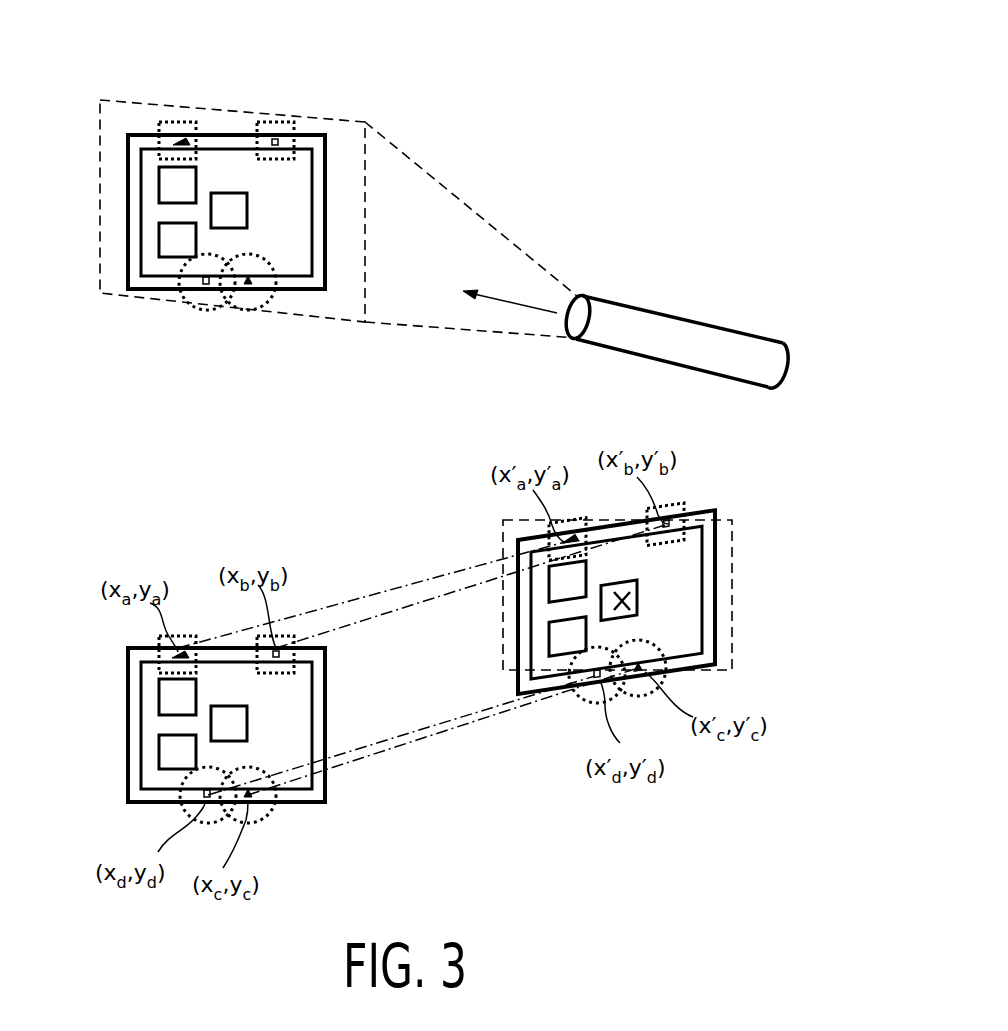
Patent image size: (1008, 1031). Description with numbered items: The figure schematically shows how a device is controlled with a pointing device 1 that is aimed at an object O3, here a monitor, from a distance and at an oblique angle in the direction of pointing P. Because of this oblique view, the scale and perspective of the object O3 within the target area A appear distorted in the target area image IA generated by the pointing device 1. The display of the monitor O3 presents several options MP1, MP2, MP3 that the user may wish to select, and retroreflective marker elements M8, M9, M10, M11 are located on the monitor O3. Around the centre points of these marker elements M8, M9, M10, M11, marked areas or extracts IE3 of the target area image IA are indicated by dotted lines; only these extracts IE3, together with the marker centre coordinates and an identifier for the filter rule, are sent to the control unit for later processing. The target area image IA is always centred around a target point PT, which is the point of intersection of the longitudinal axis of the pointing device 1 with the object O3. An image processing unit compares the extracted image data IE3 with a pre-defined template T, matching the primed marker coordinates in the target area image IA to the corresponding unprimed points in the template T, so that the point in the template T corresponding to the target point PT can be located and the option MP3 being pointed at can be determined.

The target area A is at (130, 100).
The object O3 is at (147, 282).
The option MP1 is at (165, 183).
The option MP2 is at (165, 240).
The option MP3 is at (238, 214).
The extracted image data IE3 is at (168, 122).
The retroreflective marker element M8 is at (180, 141).
The retroreflective marker element M9 is at (277, 140).
The retroreflective marker element M10 is at (205, 300).
The retroreflective marker element M11 is at (248, 300).
The pointing device 1 is at (780, 358).
The direction of pointing P is at (512, 303).
The template T is at (125, 722).
The target area image IA is at (732, 543).
The target point PT is at (622, 601).